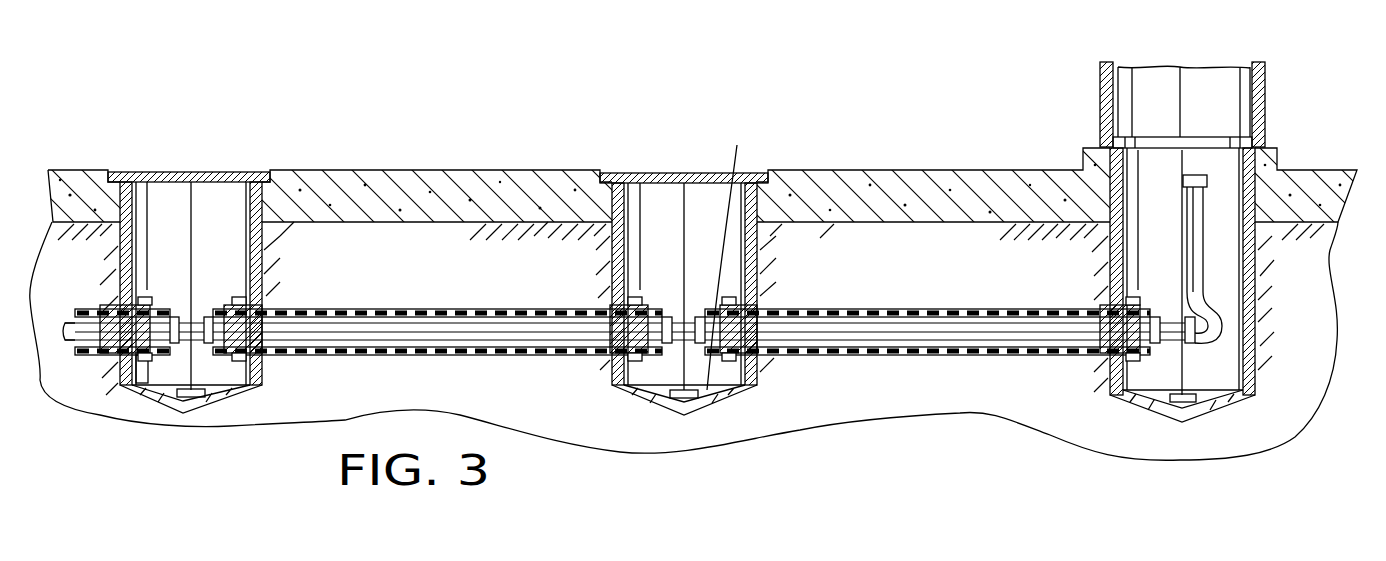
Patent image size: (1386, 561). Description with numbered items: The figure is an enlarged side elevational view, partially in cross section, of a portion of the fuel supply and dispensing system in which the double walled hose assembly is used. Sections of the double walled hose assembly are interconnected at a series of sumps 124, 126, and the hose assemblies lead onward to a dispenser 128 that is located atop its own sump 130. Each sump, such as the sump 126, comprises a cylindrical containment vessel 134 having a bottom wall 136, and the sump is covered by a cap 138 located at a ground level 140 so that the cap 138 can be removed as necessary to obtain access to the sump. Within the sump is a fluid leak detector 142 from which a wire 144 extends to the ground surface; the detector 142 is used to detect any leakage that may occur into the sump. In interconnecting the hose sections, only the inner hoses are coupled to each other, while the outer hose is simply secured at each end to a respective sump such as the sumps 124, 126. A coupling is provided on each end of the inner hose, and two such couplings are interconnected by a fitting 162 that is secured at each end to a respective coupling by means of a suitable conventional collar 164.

The sump 124 is at (186, 170).
The sump 126 is at (668, 170).
The dispenser 128 is at (1265, 92).
The sump 130 is at (1258, 366).
The cylindrical containment vessel 134 is at (756, 262).
The bottom wall 136 is at (748, 398).
The cap 138 is at (620, 172).
The ground level 140 is at (337, 170).
The fluid leak detector 142 is at (642, 402).
The wire 144 is at (738, 148).
The fitting 162 is at (197, 340).
The collar 164 is at (152, 305).